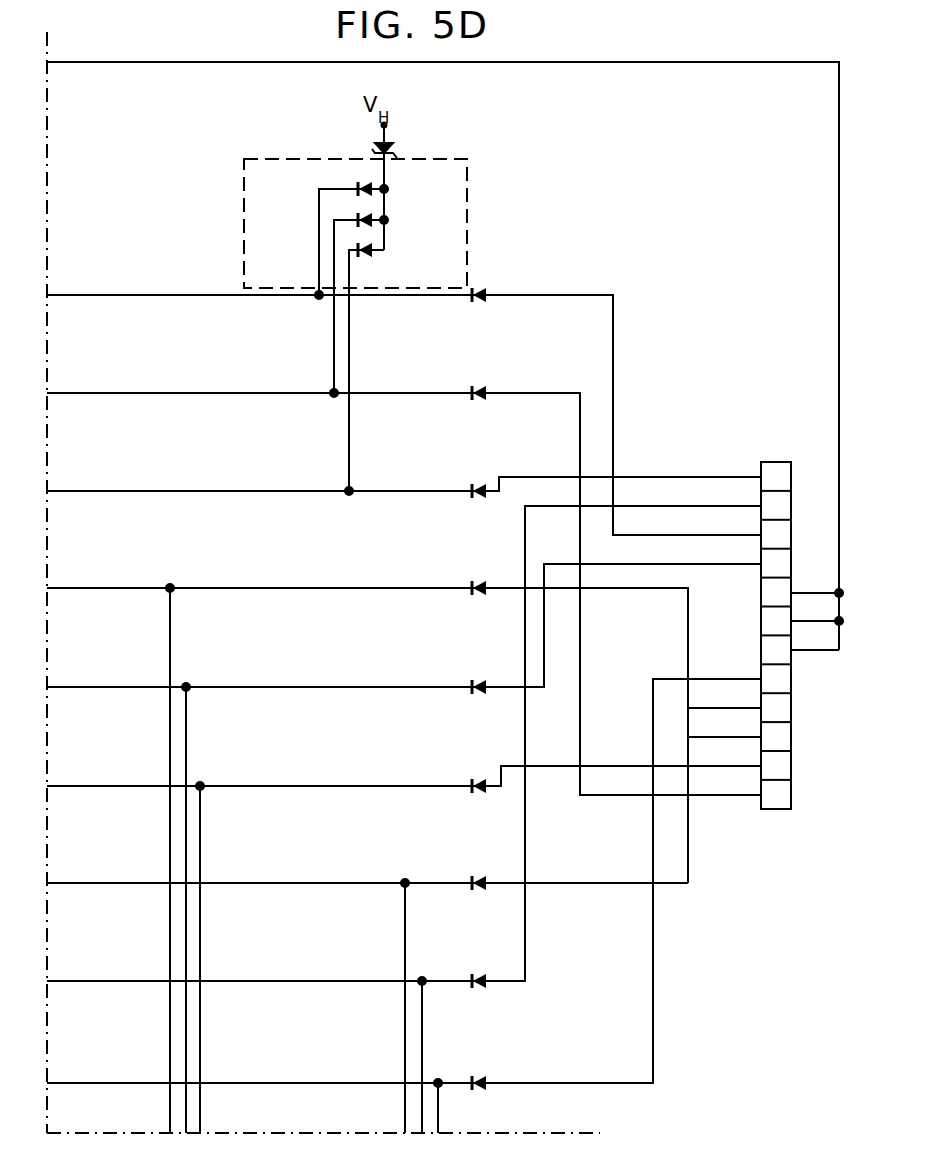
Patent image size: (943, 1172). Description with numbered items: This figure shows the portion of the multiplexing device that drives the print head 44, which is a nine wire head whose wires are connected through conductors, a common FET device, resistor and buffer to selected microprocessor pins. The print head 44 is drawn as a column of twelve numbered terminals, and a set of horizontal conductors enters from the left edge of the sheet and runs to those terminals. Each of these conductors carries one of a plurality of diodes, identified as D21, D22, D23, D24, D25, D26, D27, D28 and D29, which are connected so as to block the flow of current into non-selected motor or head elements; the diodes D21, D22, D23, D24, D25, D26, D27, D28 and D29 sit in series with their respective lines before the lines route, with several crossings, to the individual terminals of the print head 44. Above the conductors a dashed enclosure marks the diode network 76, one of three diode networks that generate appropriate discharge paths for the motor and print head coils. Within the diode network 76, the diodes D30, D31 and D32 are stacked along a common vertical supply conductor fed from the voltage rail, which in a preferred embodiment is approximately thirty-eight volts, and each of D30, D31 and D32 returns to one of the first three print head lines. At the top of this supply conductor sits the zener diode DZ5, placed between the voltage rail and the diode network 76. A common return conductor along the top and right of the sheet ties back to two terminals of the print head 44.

The diode network 76 is at (470, 185).
The print head 44 is at (795, 680).
The zener diode DZ5 is at (412, 187).
The diode D21 is at (404, 399).
The diode D22 is at (404, 577).
The diode D23 is at (404, 478).
The diode D24 is at (404, 843).
The diode D25 is at (404, 848).
The diode D26 is at (404, 943).
The diode D27 is at (367, 991).
The diode D28 is at (404, 819).
The diode D29 is at (404, 906).
The diode D30 is at (344, 230).
The diode D31 is at (356, 297).
The diode D32 is at (379, 369).